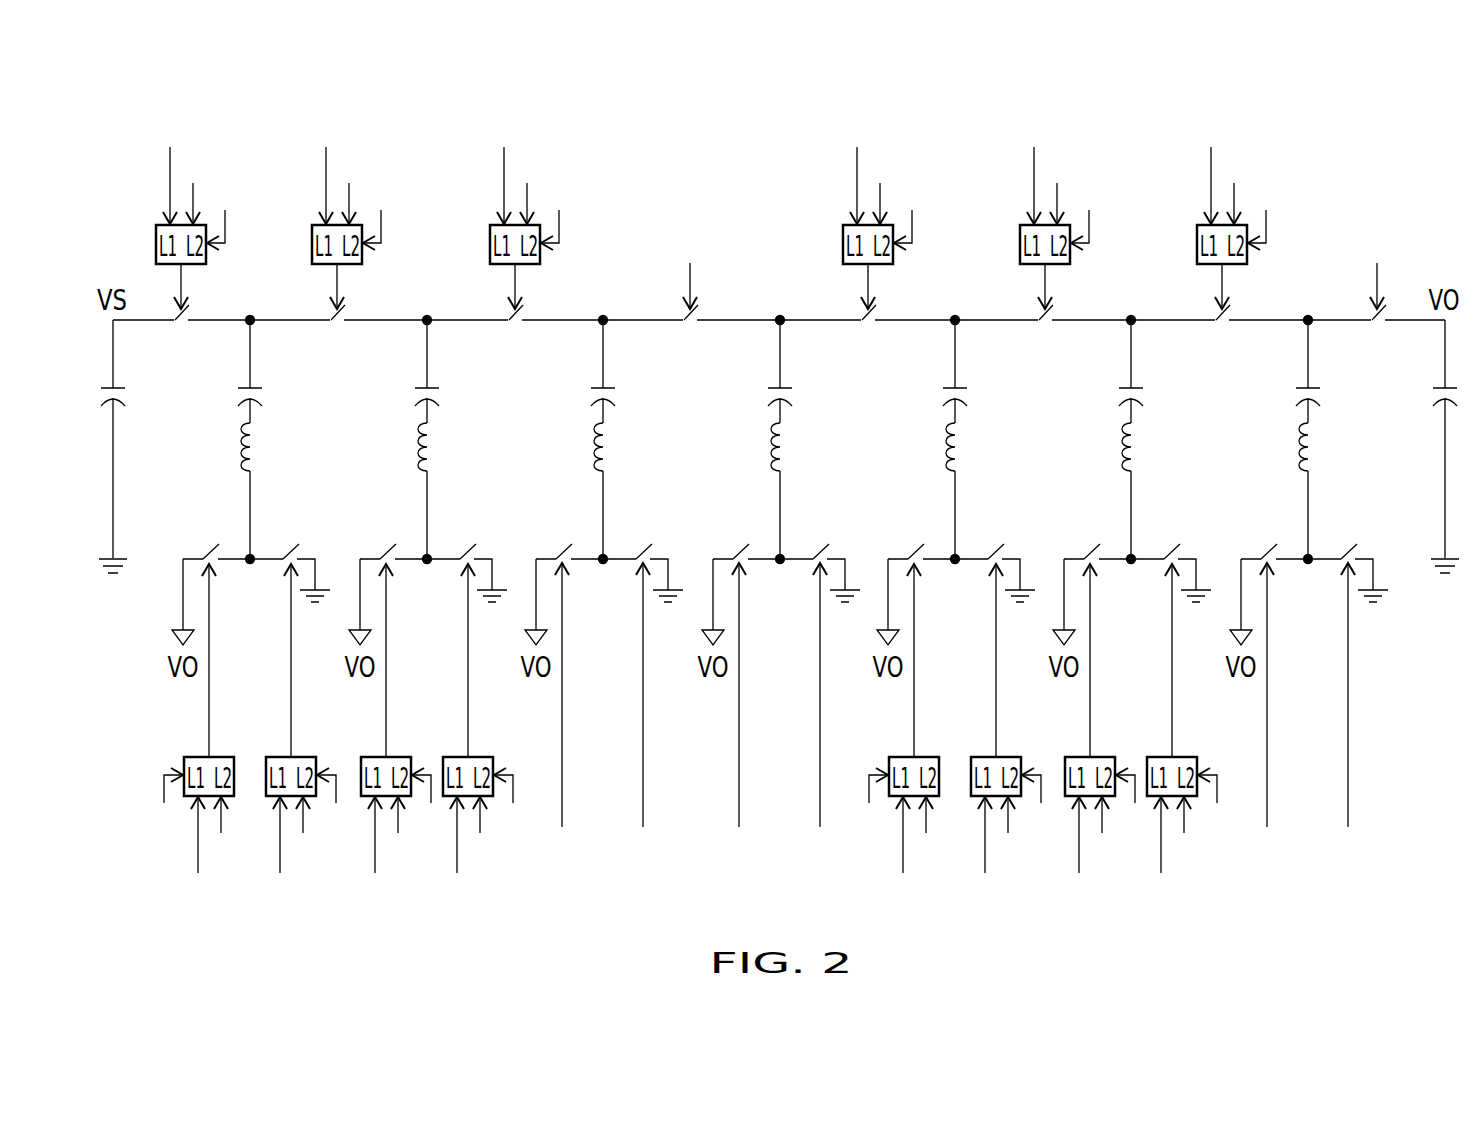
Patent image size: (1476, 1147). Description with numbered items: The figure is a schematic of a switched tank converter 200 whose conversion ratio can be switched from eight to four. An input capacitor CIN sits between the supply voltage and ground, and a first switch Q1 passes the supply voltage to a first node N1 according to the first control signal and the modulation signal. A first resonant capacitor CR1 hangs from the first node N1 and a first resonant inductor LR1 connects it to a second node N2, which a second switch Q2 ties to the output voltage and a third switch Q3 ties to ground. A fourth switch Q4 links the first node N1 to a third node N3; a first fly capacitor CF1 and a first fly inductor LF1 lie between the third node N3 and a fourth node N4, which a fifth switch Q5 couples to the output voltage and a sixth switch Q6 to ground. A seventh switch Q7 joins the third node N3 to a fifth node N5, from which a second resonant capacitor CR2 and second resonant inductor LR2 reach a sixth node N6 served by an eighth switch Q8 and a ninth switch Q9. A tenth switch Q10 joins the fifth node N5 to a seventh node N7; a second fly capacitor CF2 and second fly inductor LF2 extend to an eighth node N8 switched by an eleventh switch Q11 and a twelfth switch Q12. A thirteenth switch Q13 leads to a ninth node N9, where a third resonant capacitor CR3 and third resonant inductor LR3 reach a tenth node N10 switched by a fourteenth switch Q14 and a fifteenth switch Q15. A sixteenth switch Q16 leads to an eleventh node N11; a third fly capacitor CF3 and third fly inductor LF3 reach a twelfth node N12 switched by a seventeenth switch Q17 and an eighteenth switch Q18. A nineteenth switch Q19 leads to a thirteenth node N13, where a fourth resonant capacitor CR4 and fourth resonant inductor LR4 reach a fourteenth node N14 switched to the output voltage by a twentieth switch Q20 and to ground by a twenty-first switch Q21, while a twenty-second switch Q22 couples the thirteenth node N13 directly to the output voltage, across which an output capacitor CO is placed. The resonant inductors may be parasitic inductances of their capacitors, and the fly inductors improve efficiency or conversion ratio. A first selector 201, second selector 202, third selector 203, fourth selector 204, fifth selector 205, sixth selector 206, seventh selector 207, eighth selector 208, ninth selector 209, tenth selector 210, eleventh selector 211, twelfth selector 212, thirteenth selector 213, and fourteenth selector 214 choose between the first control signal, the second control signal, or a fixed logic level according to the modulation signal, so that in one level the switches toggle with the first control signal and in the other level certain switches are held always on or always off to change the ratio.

The switched tank converter 200 is at (667, 145).
The first selector 201 is at (157, 244).
The second selector 202 is at (199, 756).
The third selector 203 is at (281, 756).
The fourth selector 204 is at (355, 265).
The fifth selector 205 is at (376, 756).
The sixth selector 206 is at (458, 756).
The seventh selector 207 is at (533, 265).
The eighth selector 208 is at (886, 265).
The ninth selector 209 is at (904, 756).
The tenth selector 210 is at (986, 756).
The eleventh selector 211 is at (1063, 265).
The twelfth selector 212 is at (1080, 756).
The thirteenth selector 213 is at (1162, 756).
The fourteenth selector 214 is at (1240, 265).
The first switch Q1 is at (185, 324).
The second switch Q2 is at (210, 545).
The third switch Q3 is at (290, 545).
The fourth switch Q4 is at (341, 324).
The fifth switch Q5 is at (387, 545).
The sixth switch Q6 is at (467, 545).
The seventh switch Q7 is at (519, 324).
The eighth switch Q8 is at (563, 545).
The ninth switch Q9 is at (643, 545).
The tenth switch Q10 is at (694, 324).
The eleventh switch Q11 is at (740, 545).
The twelfth switch Q12 is at (820, 545).
The thirteenth switch Q13 is at (872, 324).
The fourteenth switch Q14 is at (915, 545).
The fifteenth switch Q15 is at (995, 545).
The sixteenth switch Q16 is at (1049, 324).
The seventeenth switch Q17 is at (1091, 545).
The eighteenth switch Q18 is at (1171, 545).
The nineteenth switch Q19 is at (1226, 324).
The twentieth switch Q20 is at (1268, 545).
The twenty-first switch Q21 is at (1348, 545).
The twenty-second switch Q22 is at (1382, 324).
The first node N1 is at (250, 314).
The second node N2 is at (250, 566).
The third node N3 is at (427, 314).
The fourth node N4 is at (427, 566).
The fifth node N5 is at (603, 314).
The sixth node N6 is at (603, 566).
The seventh node N7 is at (780, 314).
The eighth node N8 is at (780, 566).
The ninth node N9 is at (955, 314).
The tenth node N10 is at (955, 566).
The eleventh node N11 is at (1131, 314).
The twelfth node N12 is at (1131, 566).
The thirteenth node N13 is at (1308, 314).
The fourteenth node N14 is at (1308, 566).
The first resonant capacitor CR1 is at (262, 392).
The second resonant capacitor CR2 is at (615, 392).
The third resonant capacitor CR3 is at (967, 392).
The fourth resonant capacitor CR4 is at (1296, 394).
The first resonant inductor LR1 is at (257, 453).
The second resonant inductor LR2 is at (610, 453).
The third resonant inductor LR3 is at (962, 453).
The fourth resonant inductor LR4 is at (1316, 454).
The first fly capacitor CF1 is at (439, 392).
The second fly capacitor CF2 is at (792, 392).
The third fly capacitor CF3 is at (1143, 392).
The first fly inductor LF1 is at (434, 453).
The second fly inductor LF2 is at (787, 453).
The third fly inductor LF3 is at (1138, 453).
The input capacitor CIN is at (127, 394).
The output capacitor CO is at (1433, 394).